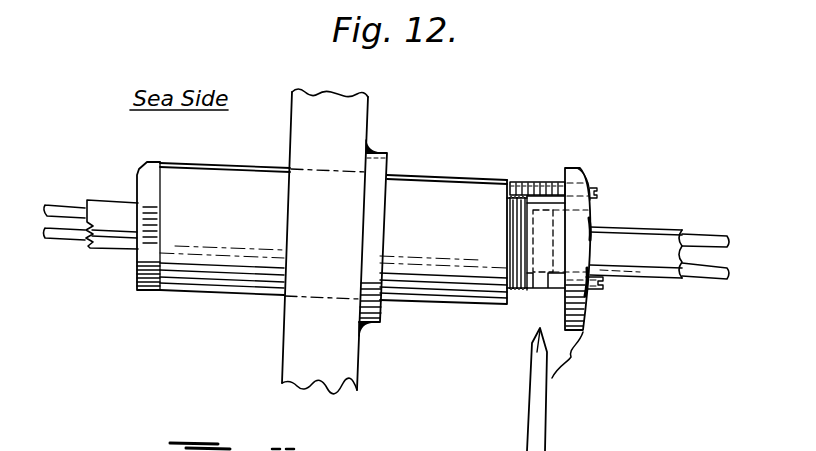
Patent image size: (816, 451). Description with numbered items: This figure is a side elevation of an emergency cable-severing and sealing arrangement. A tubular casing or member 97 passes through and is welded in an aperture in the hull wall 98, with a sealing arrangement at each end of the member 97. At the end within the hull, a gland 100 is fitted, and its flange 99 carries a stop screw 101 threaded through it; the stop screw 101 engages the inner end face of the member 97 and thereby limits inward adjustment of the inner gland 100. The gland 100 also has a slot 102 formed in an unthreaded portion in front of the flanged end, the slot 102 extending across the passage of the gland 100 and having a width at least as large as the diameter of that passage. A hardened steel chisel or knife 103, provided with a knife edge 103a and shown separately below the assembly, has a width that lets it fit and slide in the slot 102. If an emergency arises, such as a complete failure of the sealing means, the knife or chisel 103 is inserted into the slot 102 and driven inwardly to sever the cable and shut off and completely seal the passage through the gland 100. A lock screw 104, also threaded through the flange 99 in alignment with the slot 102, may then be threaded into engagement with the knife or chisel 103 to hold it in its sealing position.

The tubular casing or member 97 is at (239, 152).
The hull wall 98 is at (350, 115).
The flange 99 is at (578, 172).
The gland 100 is at (515, 226).
The stop screw 101 is at (530, 184).
The slot 102 is at (540, 290).
The knife or chisel 103 is at (533, 399).
The knife edge 103a is at (537, 338).
The lock screw 104 is at (604, 285).